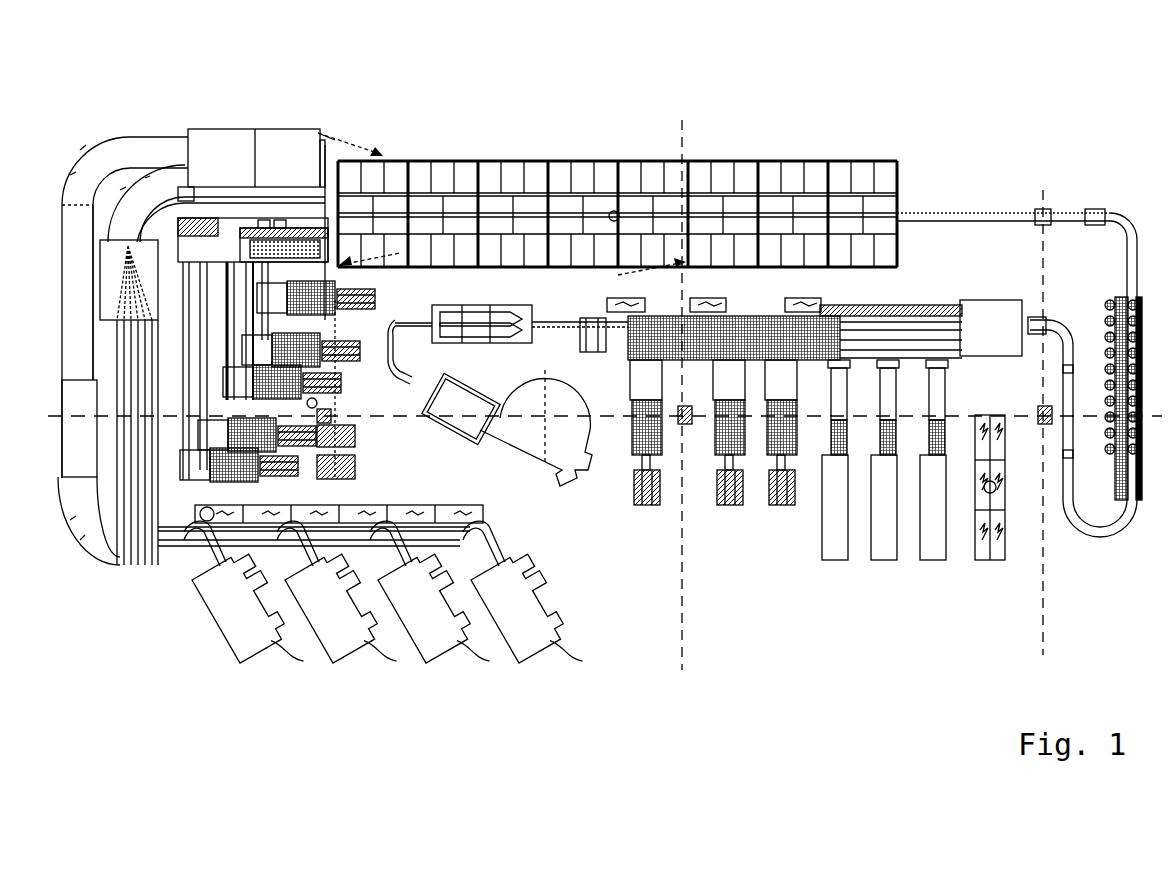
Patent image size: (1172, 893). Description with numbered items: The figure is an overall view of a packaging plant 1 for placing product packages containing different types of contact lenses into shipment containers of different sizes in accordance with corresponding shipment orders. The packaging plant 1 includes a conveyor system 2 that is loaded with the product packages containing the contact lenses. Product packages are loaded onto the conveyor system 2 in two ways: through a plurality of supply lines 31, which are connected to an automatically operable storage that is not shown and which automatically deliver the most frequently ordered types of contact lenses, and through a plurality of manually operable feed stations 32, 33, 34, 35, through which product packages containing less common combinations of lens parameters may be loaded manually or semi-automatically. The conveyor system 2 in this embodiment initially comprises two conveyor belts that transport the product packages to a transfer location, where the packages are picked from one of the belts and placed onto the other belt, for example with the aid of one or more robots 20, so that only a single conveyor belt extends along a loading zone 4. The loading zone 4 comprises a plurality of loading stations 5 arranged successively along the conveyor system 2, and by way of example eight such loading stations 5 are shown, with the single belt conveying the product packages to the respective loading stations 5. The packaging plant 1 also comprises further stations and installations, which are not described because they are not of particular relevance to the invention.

The packaging plant 1 is at (652, 551).
The conveyor system 2 is at (174, 184).
The loading zone 4 is at (333, 78).
The loading stations 5 is at (401, 153).
The robots 20 is at (340, 142).
The supply lines 31 is at (100, 583).
The manually operable feed station 32 is at (251, 640).
The manually operable feed station 33 is at (344, 640).
The manually operable feed station 34 is at (437, 640).
The manually operable feed station 35 is at (530, 640).